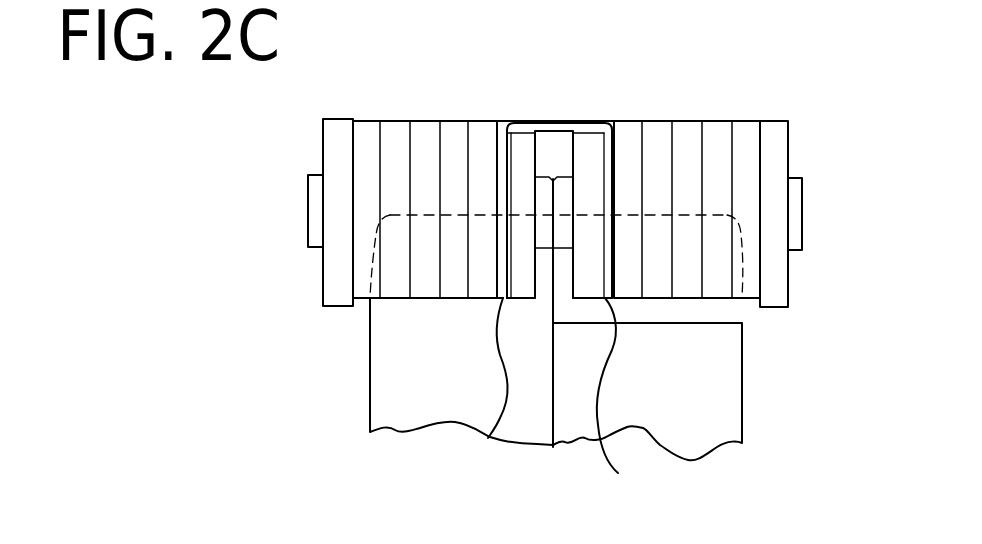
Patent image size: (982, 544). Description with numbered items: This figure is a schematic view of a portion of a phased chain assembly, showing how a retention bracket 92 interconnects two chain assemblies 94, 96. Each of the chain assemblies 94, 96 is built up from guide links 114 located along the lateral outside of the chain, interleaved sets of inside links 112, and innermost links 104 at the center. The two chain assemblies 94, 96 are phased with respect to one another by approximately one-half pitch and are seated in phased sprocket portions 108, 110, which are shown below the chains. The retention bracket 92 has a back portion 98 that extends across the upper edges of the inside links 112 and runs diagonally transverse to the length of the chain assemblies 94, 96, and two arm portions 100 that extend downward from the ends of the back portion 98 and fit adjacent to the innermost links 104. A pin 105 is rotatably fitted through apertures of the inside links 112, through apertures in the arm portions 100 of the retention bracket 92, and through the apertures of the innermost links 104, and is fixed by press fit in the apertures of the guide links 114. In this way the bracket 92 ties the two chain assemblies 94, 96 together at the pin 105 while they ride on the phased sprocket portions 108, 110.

The retention bracket 92 is at (541, 103).
The chain assembly 94 is at (436, 58).
The chain assembly 96 is at (652, 60).
The back portion 98 is at (569, 118).
The arm portions 100 is at (490, 432).
The innermost links 104 is at (519, 143).
The pin 105 is at (313, 210).
The phased sprocket portion 108 is at (380, 372).
The phased sprocket portion 110 is at (728, 392).
The inside links 112 is at (399, 132).
The guide links 114 is at (340, 126).